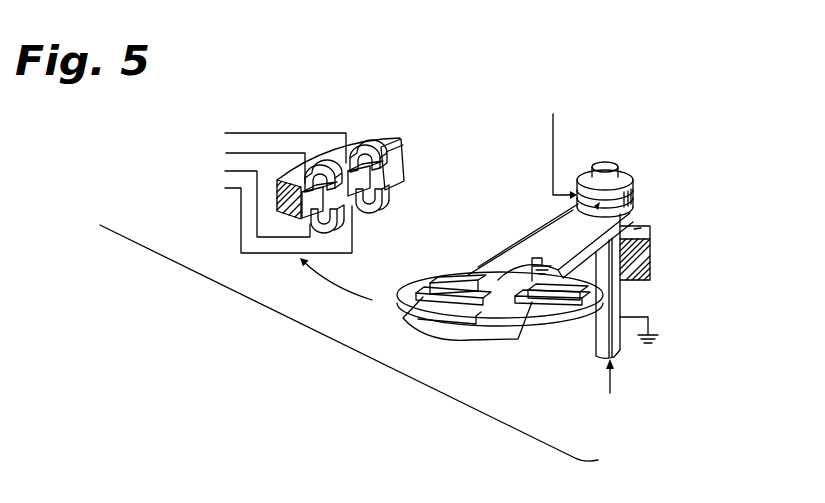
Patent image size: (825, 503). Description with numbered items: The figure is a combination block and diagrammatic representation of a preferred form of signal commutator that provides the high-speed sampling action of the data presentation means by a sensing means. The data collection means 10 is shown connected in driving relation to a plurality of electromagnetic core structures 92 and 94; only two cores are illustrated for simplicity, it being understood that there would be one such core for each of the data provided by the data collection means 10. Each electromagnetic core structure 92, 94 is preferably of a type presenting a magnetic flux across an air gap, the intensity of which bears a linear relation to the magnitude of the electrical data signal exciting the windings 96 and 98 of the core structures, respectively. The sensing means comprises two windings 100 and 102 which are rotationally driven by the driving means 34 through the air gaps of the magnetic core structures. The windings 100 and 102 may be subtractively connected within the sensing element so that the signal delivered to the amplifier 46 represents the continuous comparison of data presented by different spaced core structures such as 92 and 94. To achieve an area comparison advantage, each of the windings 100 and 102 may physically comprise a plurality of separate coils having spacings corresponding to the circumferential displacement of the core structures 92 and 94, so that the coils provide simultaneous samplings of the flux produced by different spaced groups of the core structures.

The data collection means 10 is at (226, 214).
The driving means 34 is at (626, 406).
The amplifier 46 is at (563, 132).
The electromagnetic core structure 92 is at (372, 150).
The electromagnetic core structure 94 is at (338, 222).
The exciting winding 96 is at (347, 163).
The exciting winding 98 is at (333, 201).
The sensing winding 100 is at (473, 257).
The sensing winding 102 is at (562, 302).